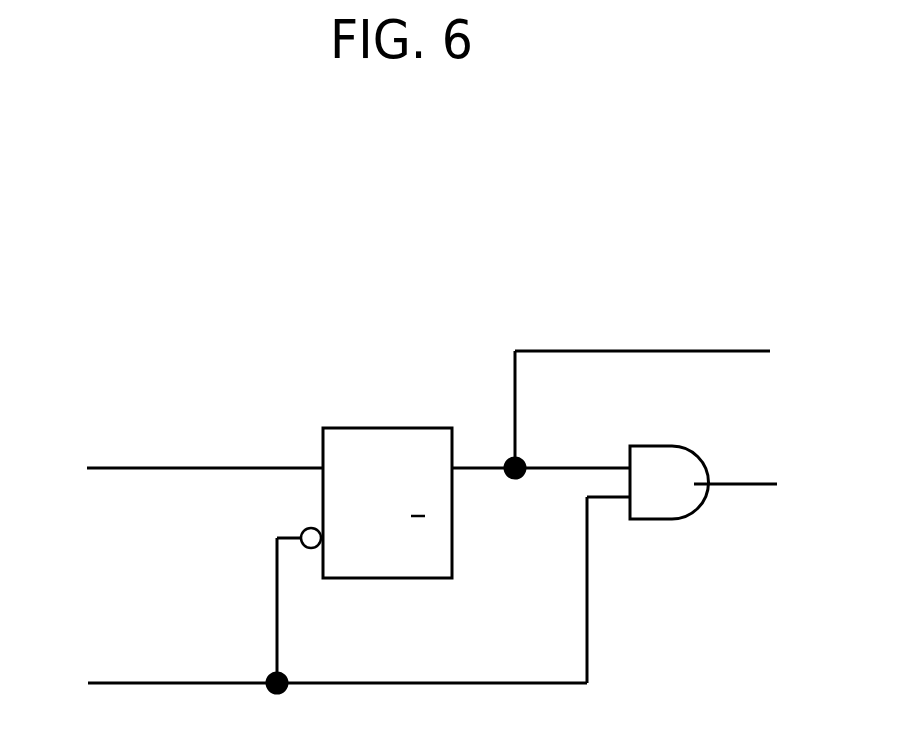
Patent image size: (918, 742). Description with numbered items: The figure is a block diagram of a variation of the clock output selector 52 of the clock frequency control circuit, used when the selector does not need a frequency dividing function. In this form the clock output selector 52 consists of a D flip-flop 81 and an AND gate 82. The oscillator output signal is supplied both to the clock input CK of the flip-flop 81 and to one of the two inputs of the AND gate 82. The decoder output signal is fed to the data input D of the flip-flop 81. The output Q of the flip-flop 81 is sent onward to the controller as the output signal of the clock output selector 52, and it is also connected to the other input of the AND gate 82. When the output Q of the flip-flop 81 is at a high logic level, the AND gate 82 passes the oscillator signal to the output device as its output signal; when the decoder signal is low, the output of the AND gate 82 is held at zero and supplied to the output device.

The clock output selector 52 is at (145, 283).
The D flip-flop 81 is at (368, 428).
The AND gate 82 is at (652, 446).